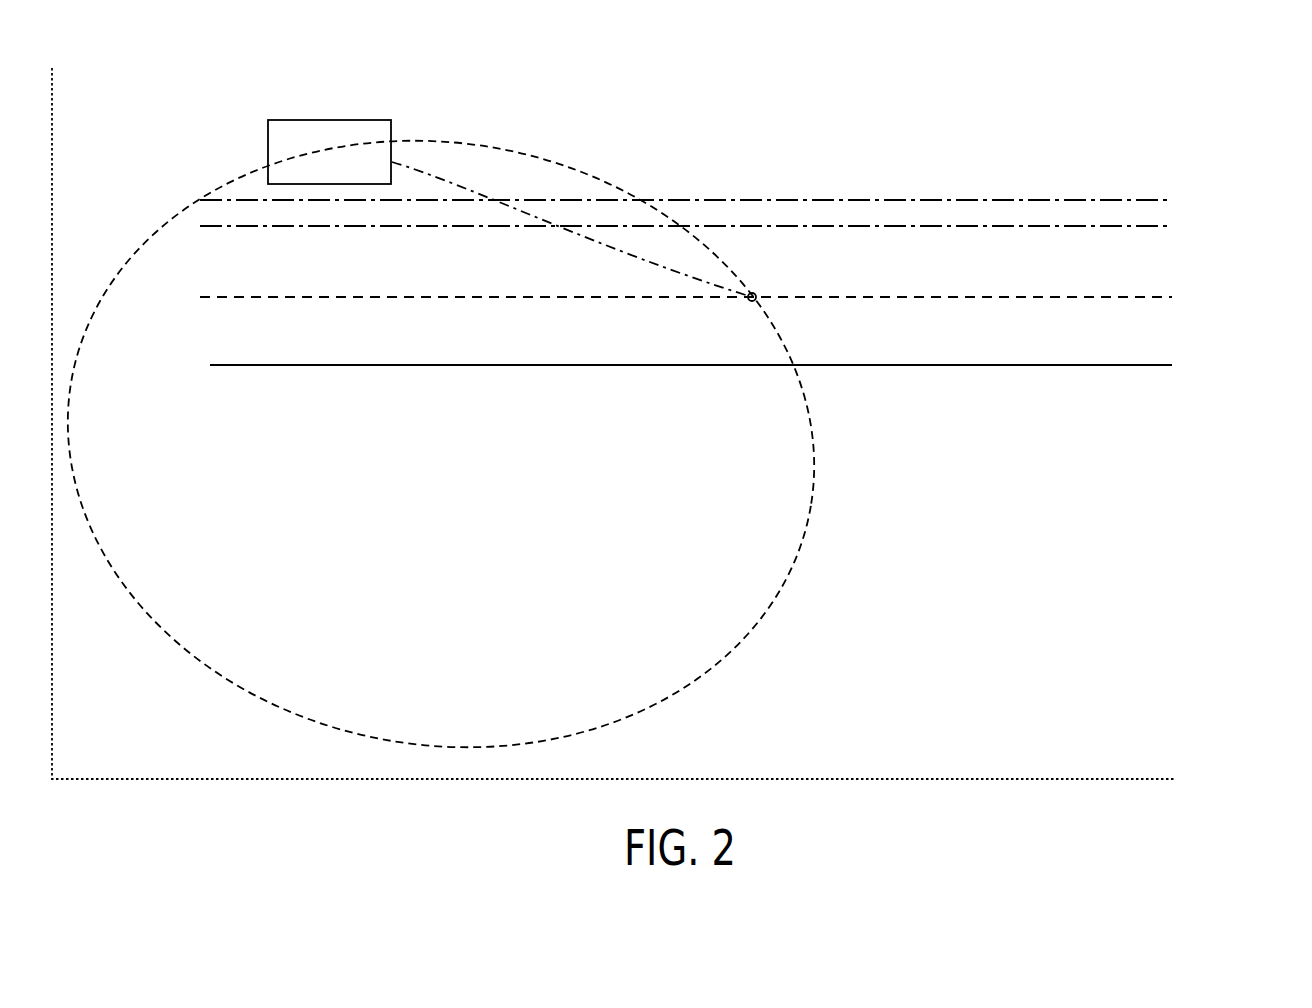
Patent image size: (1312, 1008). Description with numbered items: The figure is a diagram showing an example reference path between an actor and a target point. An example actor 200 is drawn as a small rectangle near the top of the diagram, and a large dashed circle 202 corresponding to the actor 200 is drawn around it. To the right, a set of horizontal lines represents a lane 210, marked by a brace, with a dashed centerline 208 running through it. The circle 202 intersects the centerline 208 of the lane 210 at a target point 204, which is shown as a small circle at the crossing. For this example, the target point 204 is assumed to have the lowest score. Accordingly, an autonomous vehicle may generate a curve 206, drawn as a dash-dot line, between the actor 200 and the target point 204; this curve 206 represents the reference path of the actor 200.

The actor 200 is at (329, 120).
The circle 202 is at (551, 162).
The target point 204 is at (757, 293).
The curve 206 is at (583, 242).
The centerline 208 is at (993, 297).
The lane 210 is at (1203, 242).